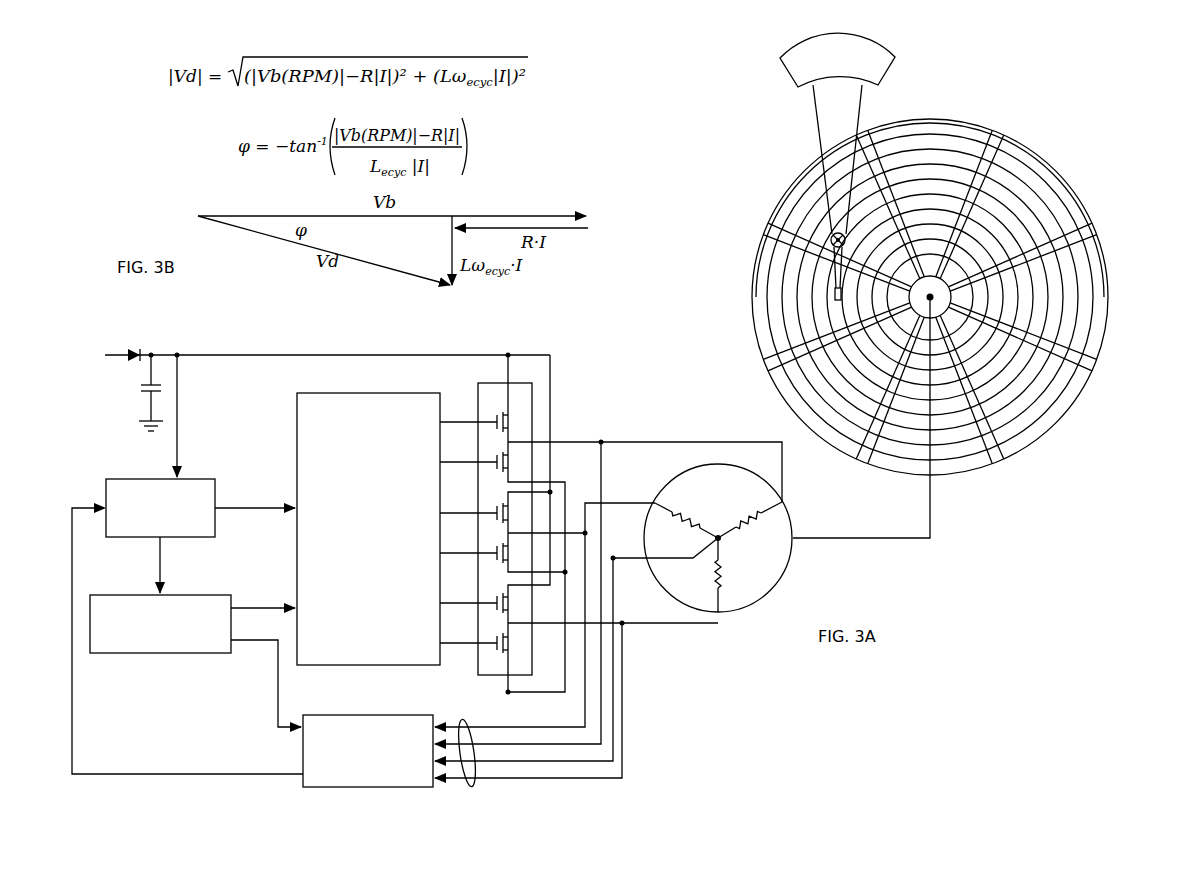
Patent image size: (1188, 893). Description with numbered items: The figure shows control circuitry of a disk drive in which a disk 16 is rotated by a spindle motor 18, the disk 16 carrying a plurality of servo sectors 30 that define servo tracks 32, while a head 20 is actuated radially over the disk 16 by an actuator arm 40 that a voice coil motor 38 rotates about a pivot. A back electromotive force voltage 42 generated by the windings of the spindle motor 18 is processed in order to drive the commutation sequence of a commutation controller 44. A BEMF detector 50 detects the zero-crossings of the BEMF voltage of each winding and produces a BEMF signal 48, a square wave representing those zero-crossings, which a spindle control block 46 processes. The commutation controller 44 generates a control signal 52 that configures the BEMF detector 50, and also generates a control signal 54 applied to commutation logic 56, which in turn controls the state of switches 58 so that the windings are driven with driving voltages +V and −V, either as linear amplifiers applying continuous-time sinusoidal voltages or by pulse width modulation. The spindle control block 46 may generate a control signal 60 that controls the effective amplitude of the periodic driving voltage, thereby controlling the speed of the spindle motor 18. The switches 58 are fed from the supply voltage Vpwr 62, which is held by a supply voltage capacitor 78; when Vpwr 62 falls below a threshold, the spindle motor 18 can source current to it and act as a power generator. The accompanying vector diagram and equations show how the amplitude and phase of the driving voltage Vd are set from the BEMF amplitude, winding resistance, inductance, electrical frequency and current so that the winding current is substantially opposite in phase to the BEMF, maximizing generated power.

The disk 16 is at (1054, 158).
The spindle motor 18 is at (793, 562).
The head 20 is at (844, 298).
The servo sectors 30 is at (868, 136).
The servo tracks 32 is at (927, 145).
The voice coil motor 38 is at (790, 73).
The actuator arm 40 is at (822, 138).
The back electromotive force voltage 42 is at (471, 786).
The commutation controller 44 is at (160, 655).
The spindle control block 46 is at (197, 540).
The BEMF signal 48 is at (190, 773).
The BEMF detector 50 is at (368, 715).
The control signal 52 is at (279, 683).
The control signal 54 is at (257, 606).
The commutation logic 56 is at (368, 393).
The switches 58 is at (493, 383).
The control signal 60 is at (250, 506).
The supply voltage Vpwr 62 is at (196, 354).
The supply voltage capacitor 78 is at (139, 397).